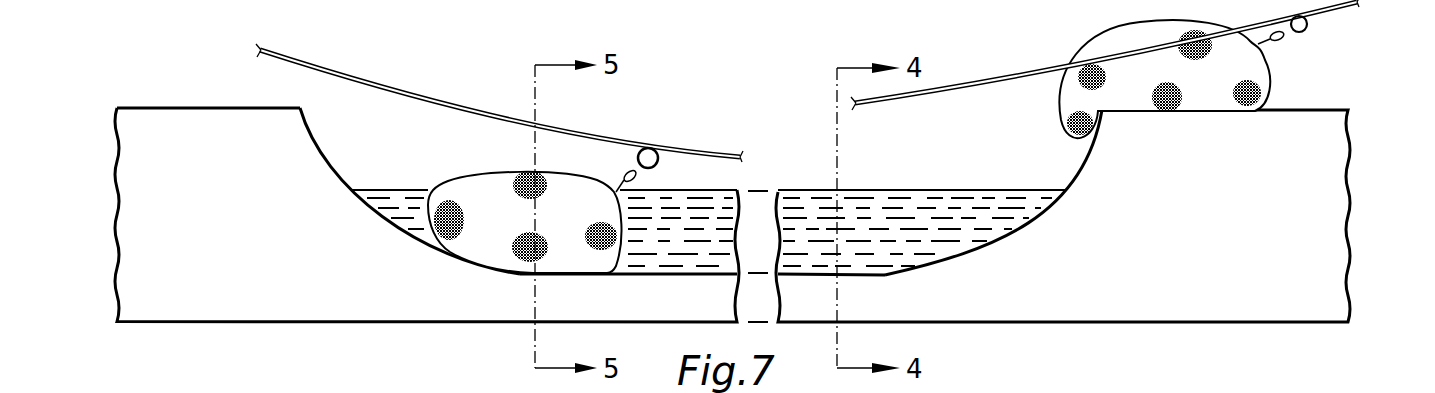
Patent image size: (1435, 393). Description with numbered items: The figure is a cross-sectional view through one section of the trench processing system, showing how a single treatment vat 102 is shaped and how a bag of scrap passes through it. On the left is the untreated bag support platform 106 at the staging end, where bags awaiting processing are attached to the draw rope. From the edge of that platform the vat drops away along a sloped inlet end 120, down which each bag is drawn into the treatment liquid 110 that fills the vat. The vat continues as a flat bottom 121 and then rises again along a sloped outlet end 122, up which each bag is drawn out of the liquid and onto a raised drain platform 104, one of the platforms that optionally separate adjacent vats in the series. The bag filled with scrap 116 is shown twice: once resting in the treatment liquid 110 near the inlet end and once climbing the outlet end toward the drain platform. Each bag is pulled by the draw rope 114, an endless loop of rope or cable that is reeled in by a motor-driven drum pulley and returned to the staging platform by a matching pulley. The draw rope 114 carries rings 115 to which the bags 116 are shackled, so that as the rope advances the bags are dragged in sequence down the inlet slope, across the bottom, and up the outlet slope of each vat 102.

The treatment vat 102 is at (722, 132).
The raised drain platform 104 is at (1296, 114).
The untreated bag support platform 106 is at (164, 107).
The treatment liquid 110 is at (373, 190).
The draw rope 114 is at (487, 98).
The ring 115 is at (660, 163).
The bag filled with scrap 116 is at (510, 172).
The sloped inlet end 120 is at (317, 143).
The flat bottom 121 is at (705, 275).
The sloped outlet end 122 is at (1077, 174).